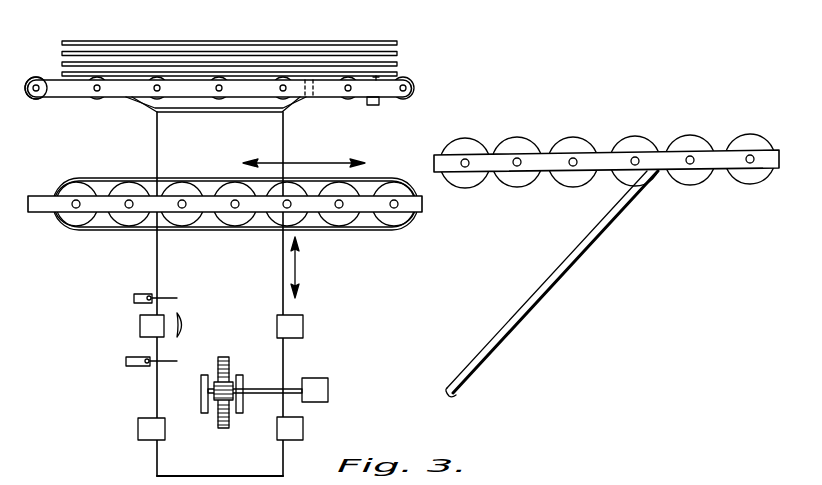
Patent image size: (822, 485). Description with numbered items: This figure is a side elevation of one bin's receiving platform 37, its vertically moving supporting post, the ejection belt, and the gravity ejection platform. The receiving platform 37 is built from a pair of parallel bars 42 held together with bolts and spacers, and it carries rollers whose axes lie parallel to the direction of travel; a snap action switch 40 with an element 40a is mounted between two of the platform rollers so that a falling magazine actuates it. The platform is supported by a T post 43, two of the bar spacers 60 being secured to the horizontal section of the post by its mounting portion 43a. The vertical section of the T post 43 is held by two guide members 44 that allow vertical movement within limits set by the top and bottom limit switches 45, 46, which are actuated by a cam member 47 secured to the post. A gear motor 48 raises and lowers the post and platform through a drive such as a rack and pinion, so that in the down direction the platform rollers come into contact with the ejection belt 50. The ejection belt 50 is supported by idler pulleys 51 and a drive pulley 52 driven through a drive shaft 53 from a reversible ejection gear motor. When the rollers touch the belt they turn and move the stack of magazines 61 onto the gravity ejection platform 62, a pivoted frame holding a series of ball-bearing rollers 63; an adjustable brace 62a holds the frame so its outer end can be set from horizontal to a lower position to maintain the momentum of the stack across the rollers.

The receiving platform 37 is at (422, 79).
The snap action switch 40 is at (378, 102).
The stop element 40a is at (376, 77).
The parallel bars 42 is at (38, 99).
The T post 43 is at (175, 134).
The carriage mounting plate 43a is at (155, 111).
The guide members 44 is at (304, 327).
The top limit switch 45 is at (134, 298).
The bottom limit switch 46 is at (126, 361).
The cam member 47 is at (183, 322).
The gear motor 48 is at (322, 390).
The ejection belt 50 is at (228, 196).
The idler pulleys 51 is at (118, 185).
The drive pulley 52 is at (398, 190).
The drive shaft 53 is at (396, 210).
The bar spacers 60 is at (310, 93).
The stack of magazines 61 is at (418, 48).
The gravity ejection platform 62 is at (726, 162).
The adjustable brace 62a is at (540, 303).
The ball-bearing rollers 63 is at (681, 148).